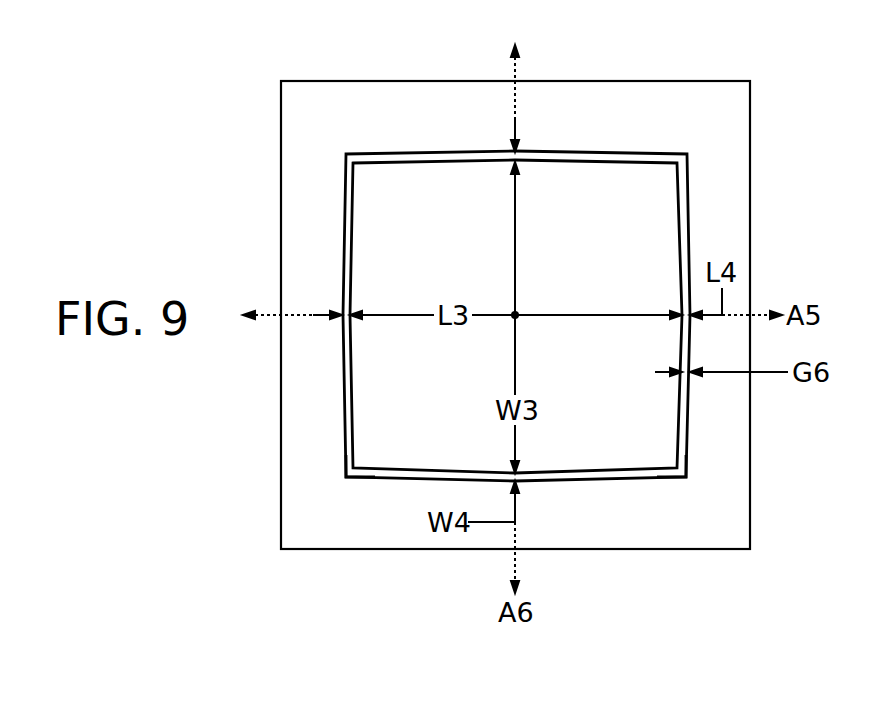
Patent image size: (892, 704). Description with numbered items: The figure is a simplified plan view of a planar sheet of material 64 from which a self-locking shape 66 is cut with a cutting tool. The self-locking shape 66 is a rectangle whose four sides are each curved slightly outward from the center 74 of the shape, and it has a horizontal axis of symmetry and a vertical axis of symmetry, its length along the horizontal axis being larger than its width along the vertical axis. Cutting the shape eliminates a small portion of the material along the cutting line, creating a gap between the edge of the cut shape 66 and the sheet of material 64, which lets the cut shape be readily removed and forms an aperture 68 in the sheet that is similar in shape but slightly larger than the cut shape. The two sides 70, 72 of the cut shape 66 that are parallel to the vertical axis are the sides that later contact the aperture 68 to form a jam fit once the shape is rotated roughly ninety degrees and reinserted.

The planar sheet of material 64 is at (737, 114).
The self-locking shape 66 is at (415, 440).
The aperture 68 is at (342, 232).
The side of the cut shape 70 is at (677, 433).
The side of the cut shape 72 is at (355, 433).
The center of the shape 74 is at (513, 312).